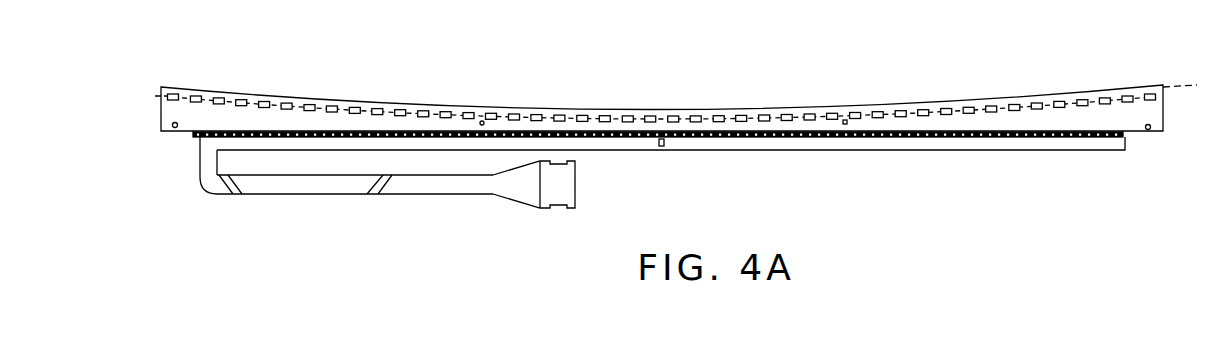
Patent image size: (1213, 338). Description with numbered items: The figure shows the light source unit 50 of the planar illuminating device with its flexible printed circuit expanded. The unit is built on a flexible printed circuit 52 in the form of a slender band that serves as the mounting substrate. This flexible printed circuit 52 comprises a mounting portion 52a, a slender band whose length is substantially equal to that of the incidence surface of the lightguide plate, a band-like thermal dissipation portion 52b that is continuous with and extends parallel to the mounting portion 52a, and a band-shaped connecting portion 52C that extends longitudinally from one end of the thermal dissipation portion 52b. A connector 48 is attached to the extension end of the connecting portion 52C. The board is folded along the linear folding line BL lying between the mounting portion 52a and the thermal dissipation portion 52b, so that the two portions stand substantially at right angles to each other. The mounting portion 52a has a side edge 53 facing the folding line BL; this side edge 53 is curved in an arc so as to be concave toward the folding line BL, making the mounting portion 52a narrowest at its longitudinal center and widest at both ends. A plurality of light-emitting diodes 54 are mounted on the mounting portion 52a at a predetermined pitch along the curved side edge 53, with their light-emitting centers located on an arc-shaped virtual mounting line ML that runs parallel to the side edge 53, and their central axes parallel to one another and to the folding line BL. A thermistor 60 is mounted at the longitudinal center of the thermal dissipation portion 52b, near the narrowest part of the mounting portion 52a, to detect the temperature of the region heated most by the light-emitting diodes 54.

The light source unit 50 is at (430, 84).
The flexible printed circuit 52 is at (745, 142).
The mounting portion 52a is at (1012, 122).
The thermal dissipation portion 52b is at (960, 142).
The connecting portion 52C is at (345, 184).
The side edge 53 is at (775, 110).
The light-emitting diodes 54 is at (264, 101).
The thermistor 60 is at (665, 144).
The connector 48 is at (572, 191).
The folding line BL is at (899, 137).
The virtual mounting line ML is at (1186, 86).